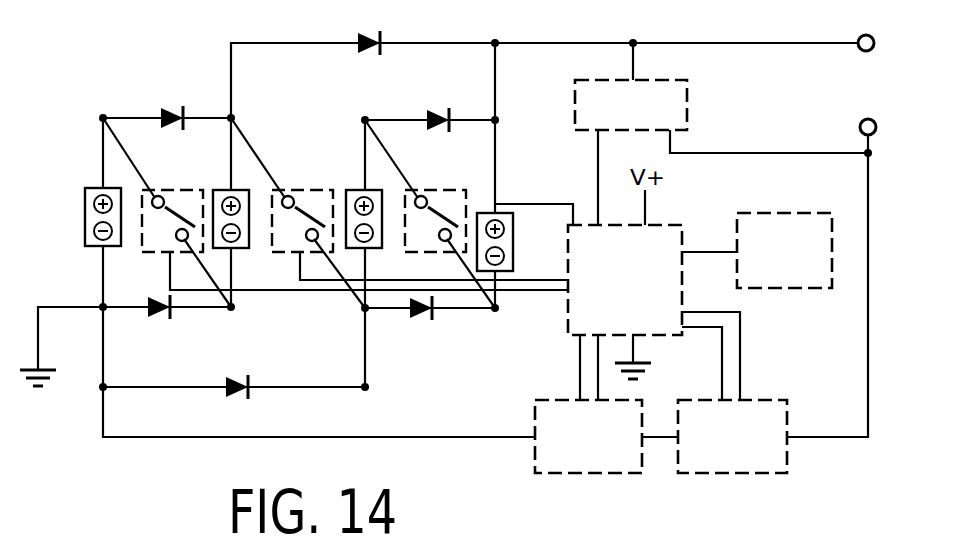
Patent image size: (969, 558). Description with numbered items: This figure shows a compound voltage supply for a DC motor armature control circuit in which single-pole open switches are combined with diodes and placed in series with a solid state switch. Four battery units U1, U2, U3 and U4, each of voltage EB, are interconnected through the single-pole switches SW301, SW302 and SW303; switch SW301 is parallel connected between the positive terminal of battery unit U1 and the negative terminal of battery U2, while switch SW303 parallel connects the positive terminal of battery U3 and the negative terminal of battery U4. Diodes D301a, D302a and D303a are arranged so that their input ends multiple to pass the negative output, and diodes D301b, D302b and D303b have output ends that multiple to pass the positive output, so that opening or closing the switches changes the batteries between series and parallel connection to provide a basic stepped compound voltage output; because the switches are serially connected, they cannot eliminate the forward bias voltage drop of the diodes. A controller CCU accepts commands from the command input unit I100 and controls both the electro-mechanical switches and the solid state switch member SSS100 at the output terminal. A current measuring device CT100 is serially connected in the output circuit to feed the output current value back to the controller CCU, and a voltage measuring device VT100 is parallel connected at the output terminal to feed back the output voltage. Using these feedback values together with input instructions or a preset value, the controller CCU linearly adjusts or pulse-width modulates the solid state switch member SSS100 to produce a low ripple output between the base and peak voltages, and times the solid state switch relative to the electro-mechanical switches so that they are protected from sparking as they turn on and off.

The diode D301a is at (544, 27).
The diode D301b is at (234, 401).
The diode D302a is at (167, 104).
The diode D302b is at (167, 322).
The diode D303a is at (430, 106).
The diode D303b is at (430, 324).
The single-pole open switch SW301 is at (298, 213).
The single-pole open switch SW302 is at (167, 212).
The single-pole open switch SW303 is at (430, 214).
The battery unit U1 is at (90, 231).
The battery unit U2 is at (240, 233).
The battery unit U3 is at (372, 233).
The battery unit U4 is at (513, 242).
The voltage measuring device VT100 is at (631, 105).
The central control unit CCU is at (625, 280).
The command input unit I100 is at (784, 250).
The current measuring device CT100 is at (588, 436).
The solid state switch member SSS100 is at (732, 436).